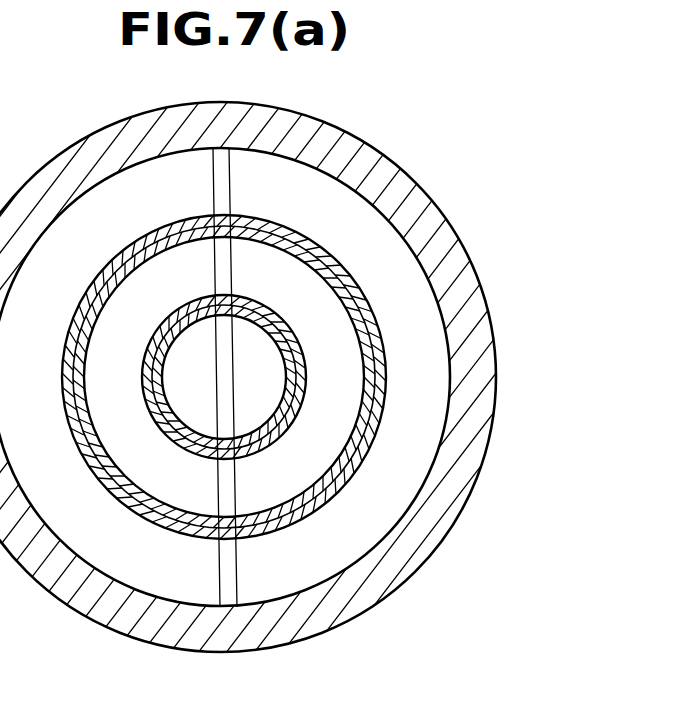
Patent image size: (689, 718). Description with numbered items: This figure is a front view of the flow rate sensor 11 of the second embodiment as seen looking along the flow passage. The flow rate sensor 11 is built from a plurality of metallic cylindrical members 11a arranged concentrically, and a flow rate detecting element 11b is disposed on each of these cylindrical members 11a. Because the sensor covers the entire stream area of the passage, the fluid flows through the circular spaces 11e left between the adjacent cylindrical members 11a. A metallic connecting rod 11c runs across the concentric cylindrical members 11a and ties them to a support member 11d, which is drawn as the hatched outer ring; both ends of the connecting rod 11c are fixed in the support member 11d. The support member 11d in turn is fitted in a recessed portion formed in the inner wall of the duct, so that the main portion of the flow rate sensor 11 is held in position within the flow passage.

The flow rate sensor 11 is at (344, 377).
The metallic cylindrical members 11a is at (383, 387).
The flow rate detecting elements 11b is at (339, 294).
The metallic connecting rod 11c is at (222, 197).
The support member 11d is at (395, 175).
The circular spaces 11e is at (143, 223).